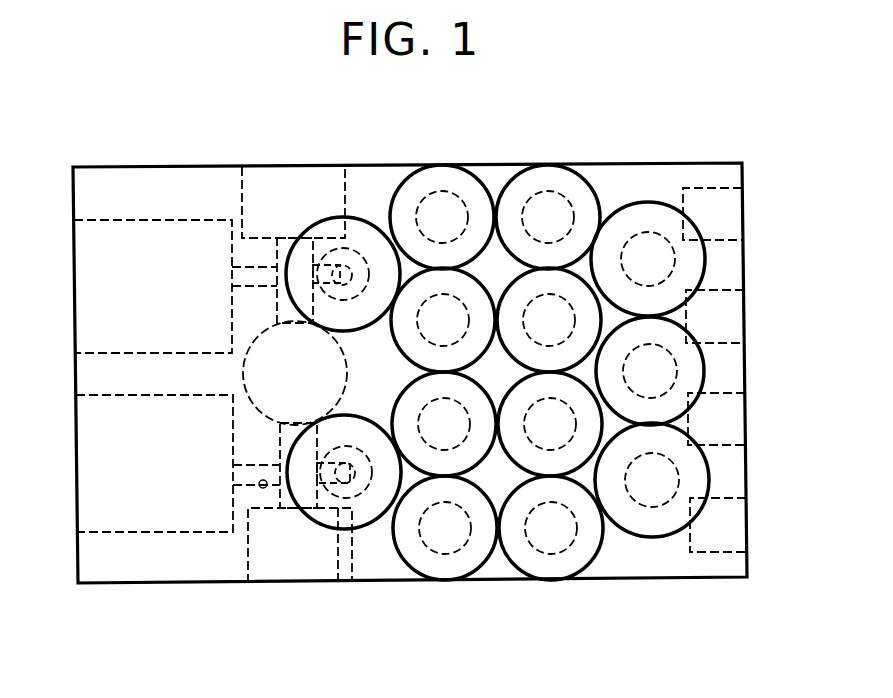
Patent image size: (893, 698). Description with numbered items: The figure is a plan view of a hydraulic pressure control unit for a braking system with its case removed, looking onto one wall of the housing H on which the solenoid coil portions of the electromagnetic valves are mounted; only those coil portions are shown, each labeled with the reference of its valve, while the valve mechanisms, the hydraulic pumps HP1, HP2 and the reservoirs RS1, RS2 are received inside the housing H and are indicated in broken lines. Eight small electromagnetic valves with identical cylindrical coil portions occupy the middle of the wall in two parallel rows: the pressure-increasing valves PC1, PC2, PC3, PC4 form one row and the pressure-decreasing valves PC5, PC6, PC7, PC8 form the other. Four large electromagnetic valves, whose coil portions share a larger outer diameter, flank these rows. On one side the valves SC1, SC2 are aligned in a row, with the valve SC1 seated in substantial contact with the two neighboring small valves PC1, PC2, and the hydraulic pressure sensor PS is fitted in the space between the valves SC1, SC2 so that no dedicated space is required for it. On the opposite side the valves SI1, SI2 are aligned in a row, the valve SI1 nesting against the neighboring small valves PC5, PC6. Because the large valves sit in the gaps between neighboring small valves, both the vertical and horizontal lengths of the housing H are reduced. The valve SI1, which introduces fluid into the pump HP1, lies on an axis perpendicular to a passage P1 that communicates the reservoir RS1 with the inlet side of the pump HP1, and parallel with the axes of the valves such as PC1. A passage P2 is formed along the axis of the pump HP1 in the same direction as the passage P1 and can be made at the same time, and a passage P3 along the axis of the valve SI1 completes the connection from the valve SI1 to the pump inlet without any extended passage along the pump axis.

The housing H is at (365, 175).
The reservoir RS1 is at (125, 510).
The reservoir RS2 is at (120, 240).
The hydraulic pressure pump HP1 is at (253, 562).
The hydraulic pressure pump HP2 is at (255, 188).
The electromagnetic valve SI1 is at (331, 468).
The electromagnetic valve SI2 is at (320, 250).
The passage P1 is at (271, 487).
The passage P2 is at (341, 482).
The passage P3 is at (354, 483).
The electromagnetic valve PC1 is at (528, 553).
The electromagnetic valve PC2 is at (577, 453).
The electromagnetic valve PC3 is at (580, 290).
The electromagnetic valve PC4 is at (520, 190).
The electromagnetic valve PC5 is at (477, 553).
The electromagnetic valve PC6 is at (422, 453).
The electromagnetic valve PC7 is at (420, 288).
The electromagnetic valve PC8 is at (468, 190).
The electromagnetic valve SC1 is at (653, 523).
The electromagnetic valve SC2 is at (647, 215).
The hydraulic pressure sensor PS is at (693, 368).